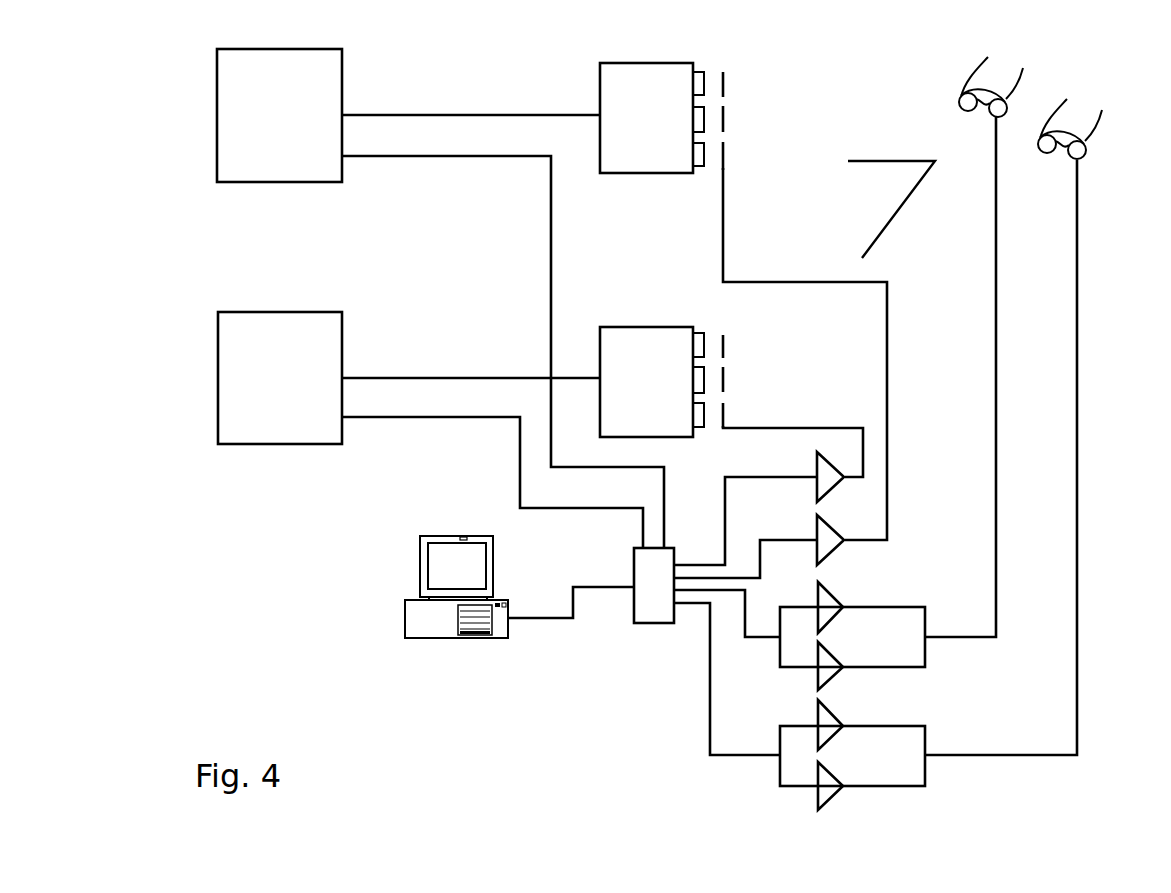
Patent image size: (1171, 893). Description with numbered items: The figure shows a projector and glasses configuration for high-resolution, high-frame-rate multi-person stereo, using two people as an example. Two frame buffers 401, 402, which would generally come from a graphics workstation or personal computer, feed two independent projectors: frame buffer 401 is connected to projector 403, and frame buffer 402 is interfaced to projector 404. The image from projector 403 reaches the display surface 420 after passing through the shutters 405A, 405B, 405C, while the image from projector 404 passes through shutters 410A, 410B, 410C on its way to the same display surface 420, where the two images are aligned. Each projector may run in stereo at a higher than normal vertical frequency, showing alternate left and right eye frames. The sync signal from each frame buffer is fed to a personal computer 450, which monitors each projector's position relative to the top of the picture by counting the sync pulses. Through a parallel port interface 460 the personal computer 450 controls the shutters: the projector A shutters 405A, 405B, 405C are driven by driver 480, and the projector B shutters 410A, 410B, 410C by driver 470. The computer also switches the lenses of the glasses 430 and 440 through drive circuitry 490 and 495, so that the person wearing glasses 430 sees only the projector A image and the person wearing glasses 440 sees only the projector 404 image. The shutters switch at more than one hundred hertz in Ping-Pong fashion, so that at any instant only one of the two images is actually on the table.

The frame buffer 401 is at (335, 88).
The frame buffer 402 is at (325, 343).
The projector 403 is at (652, 72).
The projector 404 is at (636, 330).
The shutter 405A is at (726, 85).
The shutter 405B is at (726, 118).
The shutter 405C is at (726, 153).
The shutter 410A is at (726, 352).
The shutter 410B is at (726, 387).
The shutter 410C is at (726, 420).
The display surface 420 is at (880, 161).
The glasses 430 is at (975, 82).
The glasses 440 is at (1103, 125).
The personal computer 450 is at (450, 535).
The parallel port interface 460 is at (637, 610).
The driver 470 is at (817, 461).
The driver 480 is at (817, 522).
The drive circuitry 490 is at (850, 612).
The drive circuitry 495 is at (850, 730).